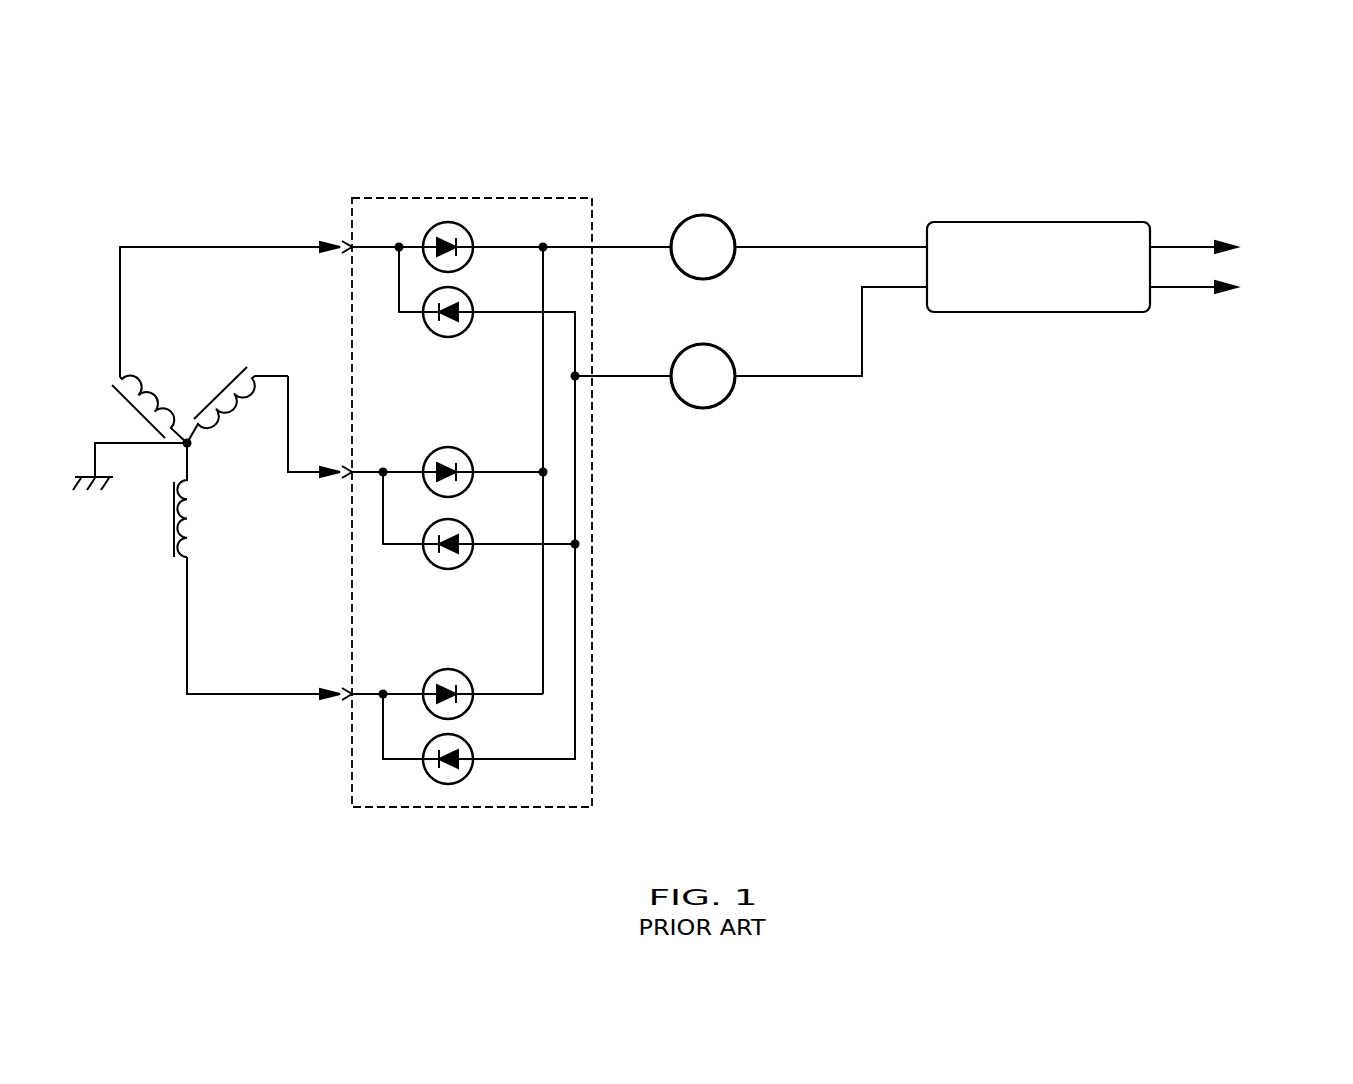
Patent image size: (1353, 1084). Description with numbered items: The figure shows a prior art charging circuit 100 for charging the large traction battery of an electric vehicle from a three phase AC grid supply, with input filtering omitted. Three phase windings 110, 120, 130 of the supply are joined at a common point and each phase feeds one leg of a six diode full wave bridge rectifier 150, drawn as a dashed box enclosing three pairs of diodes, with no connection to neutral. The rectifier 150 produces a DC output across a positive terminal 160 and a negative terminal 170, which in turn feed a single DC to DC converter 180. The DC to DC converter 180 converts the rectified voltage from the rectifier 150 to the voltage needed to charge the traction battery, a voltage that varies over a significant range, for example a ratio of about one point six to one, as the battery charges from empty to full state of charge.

The charging circuit 100 is at (703, 435).
The first phase winding 110 is at (150, 398).
The second phase winding 120 is at (232, 405).
The third phase winding 130 is at (188, 518).
The six diode full wave bridge rectifier 150 is at (592, 742).
The positive DC terminal 160 is at (685, 218).
The negative DC terminal 170 is at (685, 405).
The DC to DC converter 180 is at (997, 312).